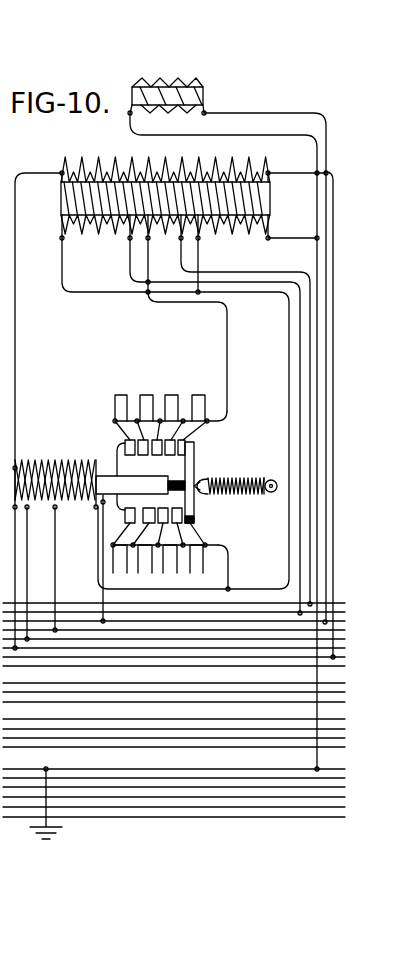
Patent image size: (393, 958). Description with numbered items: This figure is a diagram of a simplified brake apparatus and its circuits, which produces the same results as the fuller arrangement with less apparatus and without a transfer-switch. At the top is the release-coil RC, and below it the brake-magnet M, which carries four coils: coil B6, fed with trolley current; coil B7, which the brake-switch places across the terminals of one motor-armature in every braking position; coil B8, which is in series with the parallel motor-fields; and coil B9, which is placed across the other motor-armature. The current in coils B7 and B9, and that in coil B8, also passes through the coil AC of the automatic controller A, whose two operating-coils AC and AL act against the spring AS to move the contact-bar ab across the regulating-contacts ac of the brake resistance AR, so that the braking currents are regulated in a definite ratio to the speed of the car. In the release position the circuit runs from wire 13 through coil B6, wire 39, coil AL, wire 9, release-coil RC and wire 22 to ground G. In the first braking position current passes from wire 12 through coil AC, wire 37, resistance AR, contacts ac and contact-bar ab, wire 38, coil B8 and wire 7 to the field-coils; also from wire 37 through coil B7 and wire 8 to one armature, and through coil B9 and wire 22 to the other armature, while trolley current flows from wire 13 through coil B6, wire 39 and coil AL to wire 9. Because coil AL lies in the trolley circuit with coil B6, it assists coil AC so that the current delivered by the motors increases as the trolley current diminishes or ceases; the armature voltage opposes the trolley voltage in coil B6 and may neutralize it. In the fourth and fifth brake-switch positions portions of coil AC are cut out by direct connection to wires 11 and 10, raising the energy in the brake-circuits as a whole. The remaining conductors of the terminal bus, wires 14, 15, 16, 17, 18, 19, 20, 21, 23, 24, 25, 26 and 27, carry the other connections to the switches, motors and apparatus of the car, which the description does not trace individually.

The release-coil RC is at (167, 84).
The brake-magnet M is at (273, 199).
The coil of brake-magnet in trolley-circuit B6 is at (197, 173).
The coil of brake-magnet across second armature B7 is at (112, 229).
The coil of brake-magnet in motor-field circuit B8 is at (167, 229).
The coil of brake-magnet across first armature B9 is at (246, 229).
The wire 39 is at (37, 411).
The wire 38 is at (202, 324).
The wire 37 is at (235, 568).
The brake resistance AR is at (113, 406).
The automatic controller A is at (186, 477).
The contact-bar ab is at (195, 465).
The regulating-contacts ac is at (168, 508).
The spring AS is at (235, 499).
The operating-coil of autocontroller AL is at (35, 460).
The operating-coil of autocontroller AC is at (88, 463).
The wire 7 is at (110, 603).
The wire 8 is at (125, 612).
The wire 9 is at (140, 621).
The wire 10 is at (162, 630).
The wire 11 is at (185, 639).
The wire 12 is at (205, 648).
The wire 13 is at (232, 657).
The bus conductor 14 is at (174, 672).
The bus conductor 15 is at (72, 683).
The bus conductor 16 is at (98, 692).
The bus conductor 17 is at (174, 709).
The bus conductor 18 is at (174, 711).
The bus conductor 19 is at (195, 729).
The bus conductor 20 is at (228, 738).
The bus conductor 21 is at (257, 747).
The wire 22 is at (174, 761).
The bus conductor 23 is at (150, 778).
The bus conductor 24 is at (190, 787).
The bus conductor 25 is at (193, 797).
The bus conductor 26 is at (230, 807).
The bus conductor 27 is at (174, 826).
The ground G is at (58, 806).